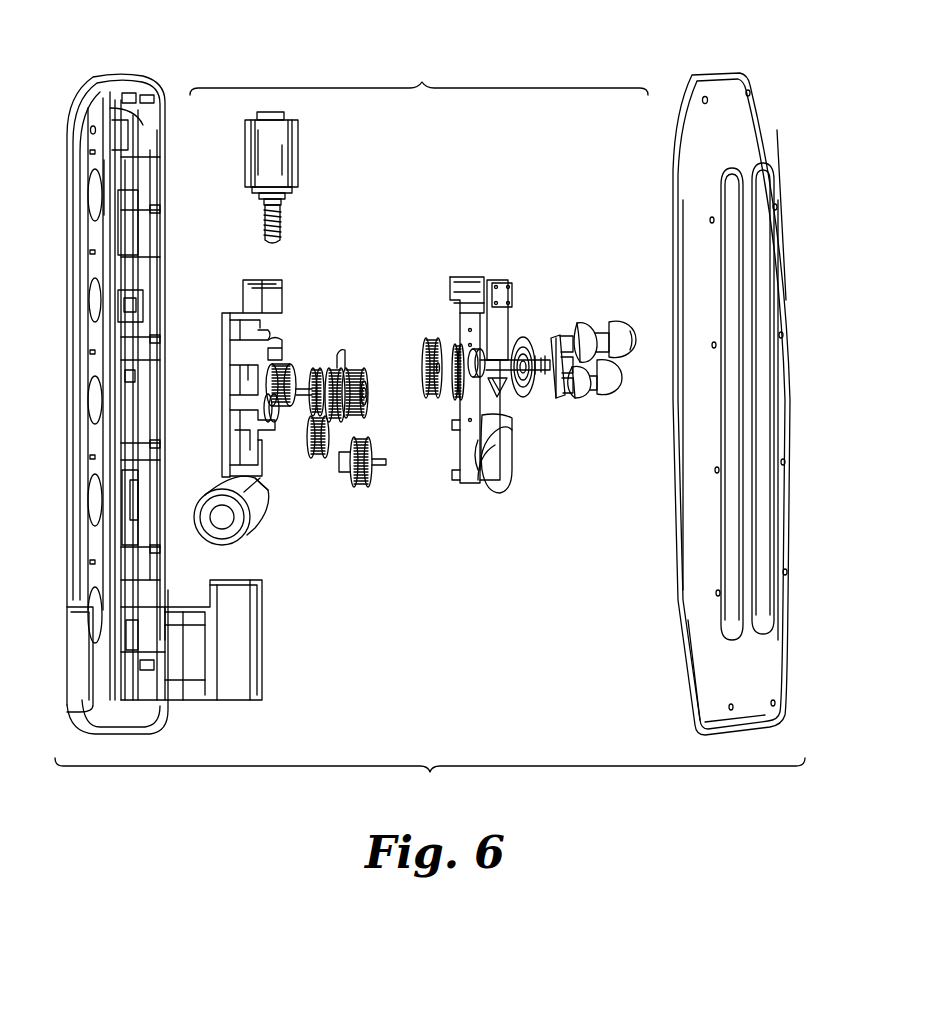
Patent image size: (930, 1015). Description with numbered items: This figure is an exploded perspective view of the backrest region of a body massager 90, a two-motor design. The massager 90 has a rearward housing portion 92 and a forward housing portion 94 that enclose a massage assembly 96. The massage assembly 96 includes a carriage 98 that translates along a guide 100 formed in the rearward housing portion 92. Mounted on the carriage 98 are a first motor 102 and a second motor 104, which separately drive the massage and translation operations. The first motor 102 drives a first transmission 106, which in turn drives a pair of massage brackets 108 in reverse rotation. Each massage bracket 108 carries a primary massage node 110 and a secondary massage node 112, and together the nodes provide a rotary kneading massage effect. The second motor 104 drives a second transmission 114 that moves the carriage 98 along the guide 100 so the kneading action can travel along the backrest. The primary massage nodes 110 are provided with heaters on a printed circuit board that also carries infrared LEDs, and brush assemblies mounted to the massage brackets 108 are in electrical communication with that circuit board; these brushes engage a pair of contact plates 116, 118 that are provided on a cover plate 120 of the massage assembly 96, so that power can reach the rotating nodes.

The body massager 90 is at (430, 778).
The rearward housing portion 92 is at (118, 76).
The forward housing portion 94 is at (715, 74).
The massage assembly 96 is at (419, 76).
The carriage 98 is at (230, 312).
The guide 100 is at (105, 188).
The first motor 102 is at (300, 152).
The second motor 104 is at (262, 520).
The first transmission 106 is at (354, 345).
The massage brackets 108 is at (560, 330).
The primary massage node 110 is at (590, 328).
The secondary massage node 112 is at (598, 400).
The second transmission 114 is at (303, 365).
The contact plate 116 is at (522, 345).
The contact plate 118 is at (528, 385).
The cover plate 120 is at (495, 492).